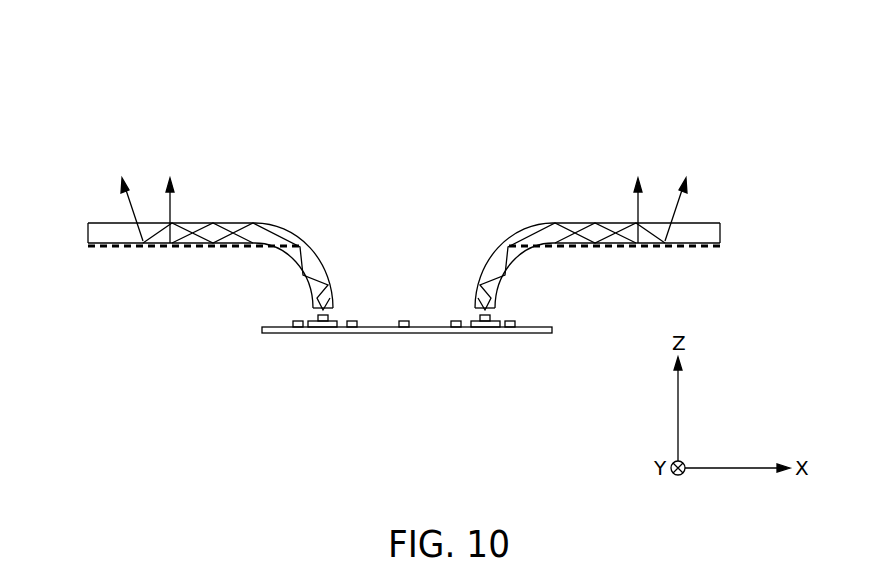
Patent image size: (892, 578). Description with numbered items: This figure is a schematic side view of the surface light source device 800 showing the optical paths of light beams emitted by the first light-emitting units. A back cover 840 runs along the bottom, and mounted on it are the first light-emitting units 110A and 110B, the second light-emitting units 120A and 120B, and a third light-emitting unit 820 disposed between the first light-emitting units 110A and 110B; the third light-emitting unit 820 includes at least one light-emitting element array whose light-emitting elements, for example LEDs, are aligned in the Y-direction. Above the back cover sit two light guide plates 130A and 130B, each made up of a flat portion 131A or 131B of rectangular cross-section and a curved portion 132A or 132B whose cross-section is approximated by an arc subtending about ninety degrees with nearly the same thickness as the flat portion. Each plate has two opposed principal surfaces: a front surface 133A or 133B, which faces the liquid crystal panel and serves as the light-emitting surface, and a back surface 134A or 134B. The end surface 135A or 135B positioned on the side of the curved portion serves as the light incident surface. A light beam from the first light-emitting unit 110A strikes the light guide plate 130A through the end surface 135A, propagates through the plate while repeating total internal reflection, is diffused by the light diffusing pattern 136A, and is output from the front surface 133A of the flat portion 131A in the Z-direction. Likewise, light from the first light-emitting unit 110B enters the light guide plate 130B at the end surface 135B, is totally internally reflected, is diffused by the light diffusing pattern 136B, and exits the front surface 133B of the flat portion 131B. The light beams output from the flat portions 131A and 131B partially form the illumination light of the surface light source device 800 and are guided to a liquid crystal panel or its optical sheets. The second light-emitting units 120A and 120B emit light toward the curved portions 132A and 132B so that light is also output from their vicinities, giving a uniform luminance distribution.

The surface light source device 800 is at (220, 110).
The light guide plate 130B is at (90, 222).
The flat portion 131B is at (232, 222).
The curved portion 132B is at (297, 233).
The front surface 133B is at (150, 222).
The back surface 134B is at (285, 264).
The end surface 135B is at (317, 311).
The light diffusing pattern 136B is at (150, 246).
The light guide plate 130A is at (716, 222).
The flat portion 131A is at (690, 222).
The curved portion 132A is at (498, 248).
The front surface 133A is at (580, 222).
The back surface 134A is at (516, 266).
The end surface 135A is at (493, 311).
The light diffusing pattern 136A is at (656, 246).
The second light-emitting unit 120B is at (300, 328).
The first light-emitting unit 110B is at (322, 333).
The second light-emitting unit 120A is at (513, 330).
The first light-emitting unit 110A is at (485, 333).
The third light-emitting unit 820 is at (350, 328).
The back cover 840 is at (552, 330).